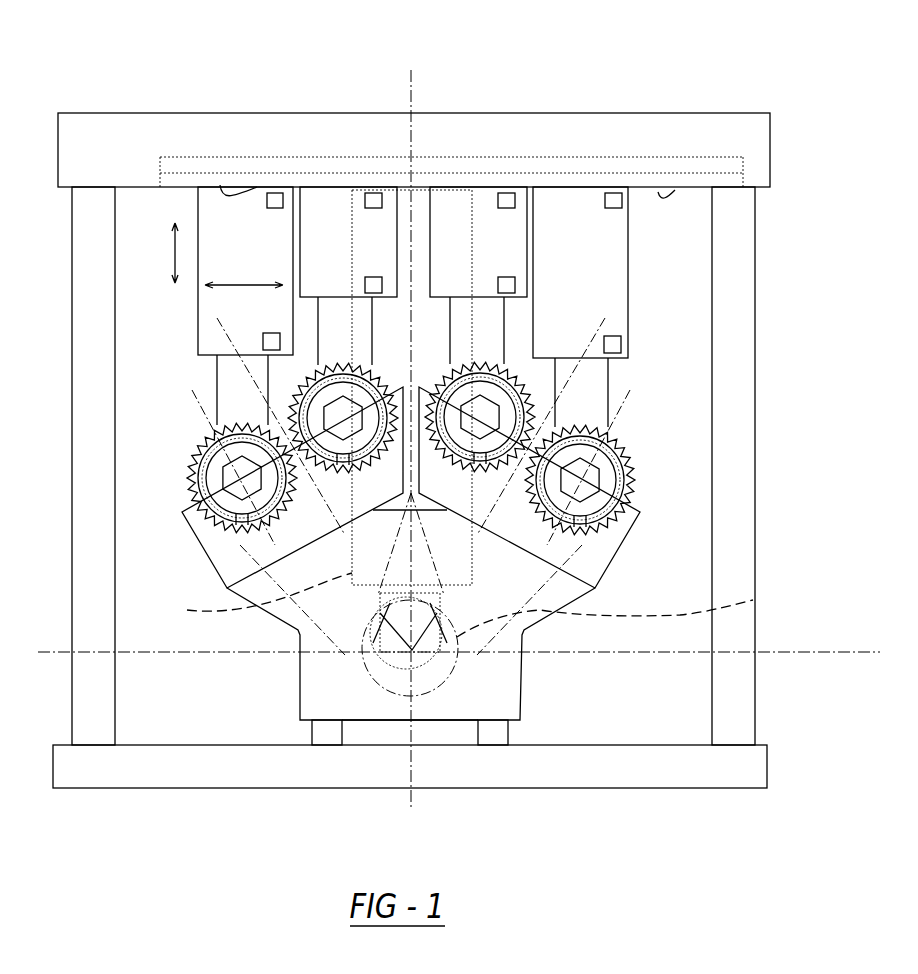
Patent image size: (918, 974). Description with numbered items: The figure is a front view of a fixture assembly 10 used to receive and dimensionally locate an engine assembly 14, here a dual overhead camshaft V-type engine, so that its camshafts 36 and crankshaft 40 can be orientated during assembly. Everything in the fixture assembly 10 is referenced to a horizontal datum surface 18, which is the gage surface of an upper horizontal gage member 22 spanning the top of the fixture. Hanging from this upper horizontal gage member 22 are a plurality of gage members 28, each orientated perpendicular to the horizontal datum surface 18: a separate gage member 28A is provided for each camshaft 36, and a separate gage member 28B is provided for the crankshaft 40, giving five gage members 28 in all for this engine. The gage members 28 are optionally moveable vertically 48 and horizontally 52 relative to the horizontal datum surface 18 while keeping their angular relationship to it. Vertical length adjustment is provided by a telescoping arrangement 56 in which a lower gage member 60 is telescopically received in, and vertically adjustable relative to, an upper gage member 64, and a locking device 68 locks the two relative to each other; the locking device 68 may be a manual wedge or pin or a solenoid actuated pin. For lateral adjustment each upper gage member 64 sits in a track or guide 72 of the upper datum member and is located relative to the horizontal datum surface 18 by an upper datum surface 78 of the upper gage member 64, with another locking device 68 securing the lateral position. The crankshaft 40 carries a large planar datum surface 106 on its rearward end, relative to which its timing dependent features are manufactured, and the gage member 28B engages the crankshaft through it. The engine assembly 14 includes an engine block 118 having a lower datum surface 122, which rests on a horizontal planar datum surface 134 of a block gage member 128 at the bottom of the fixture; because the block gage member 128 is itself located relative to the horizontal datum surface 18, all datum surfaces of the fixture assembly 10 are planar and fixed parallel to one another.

The fixture assembly 10 is at (705, 43).
The engine assembly 14 is at (653, 445).
The horizontal datum surface 18 is at (137, 188).
The upper horizontal gage member 22 is at (507, 113).
The gage members 28 is at (657, 252).
The gage member 28A is at (260, 268).
The gage member 28B is at (250, 594).
The camshaft 36 is at (240, 478).
The crankshaft 40 is at (448, 686).
The vertical movement 48 is at (173, 260).
The horizontal movement 52 is at (233, 283).
The telescoping arrangement 56 is at (653, 347).
The lower gage member 60 is at (213, 380).
The upper gage member 64 is at (437, 193).
The locking device 68 is at (373, 193).
The track or guide 72 is at (270, 162).
The upper datum surface 78 is at (220, 185).
The planar datum surface 106 is at (753, 600).
The engine block 118 is at (291, 692).
The lower datum surface 122 is at (393, 720).
The block gage member 128 is at (697, 773).
The datum surface 134 is at (327, 722).